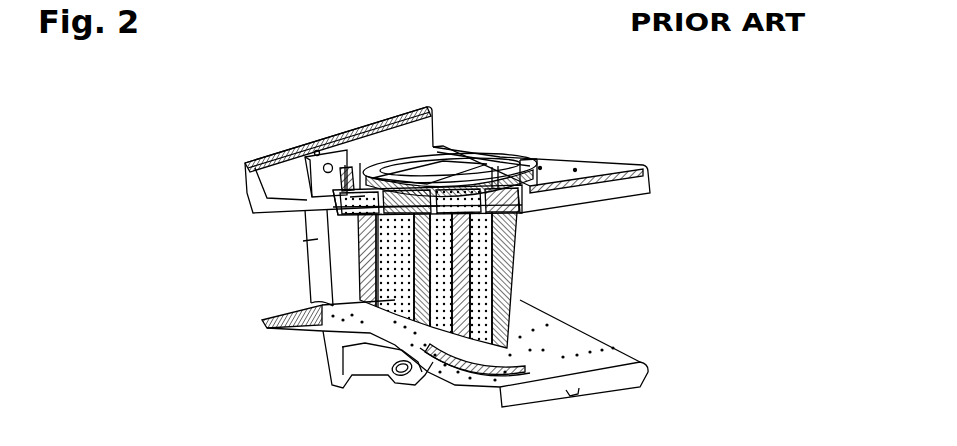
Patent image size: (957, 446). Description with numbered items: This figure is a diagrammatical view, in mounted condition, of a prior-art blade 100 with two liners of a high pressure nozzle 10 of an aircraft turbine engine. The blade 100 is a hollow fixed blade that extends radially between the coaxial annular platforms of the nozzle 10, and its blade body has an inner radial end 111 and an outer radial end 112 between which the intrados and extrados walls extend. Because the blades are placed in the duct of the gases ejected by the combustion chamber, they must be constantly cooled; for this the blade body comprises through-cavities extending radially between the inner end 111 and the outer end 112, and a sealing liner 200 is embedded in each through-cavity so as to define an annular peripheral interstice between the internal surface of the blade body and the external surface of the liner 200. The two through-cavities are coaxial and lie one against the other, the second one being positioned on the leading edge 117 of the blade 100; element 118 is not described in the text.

The high pressure nozzle 10 is at (660, 152).
The blade 100 is at (578, 238).
The inner radial end 111 is at (322, 334).
The outer radial end 112 is at (457, 148).
The leading edge 117 is at (522, 281).
The strut 118 is at (312, 241).
The sealing liner 200 is at (490, 160).